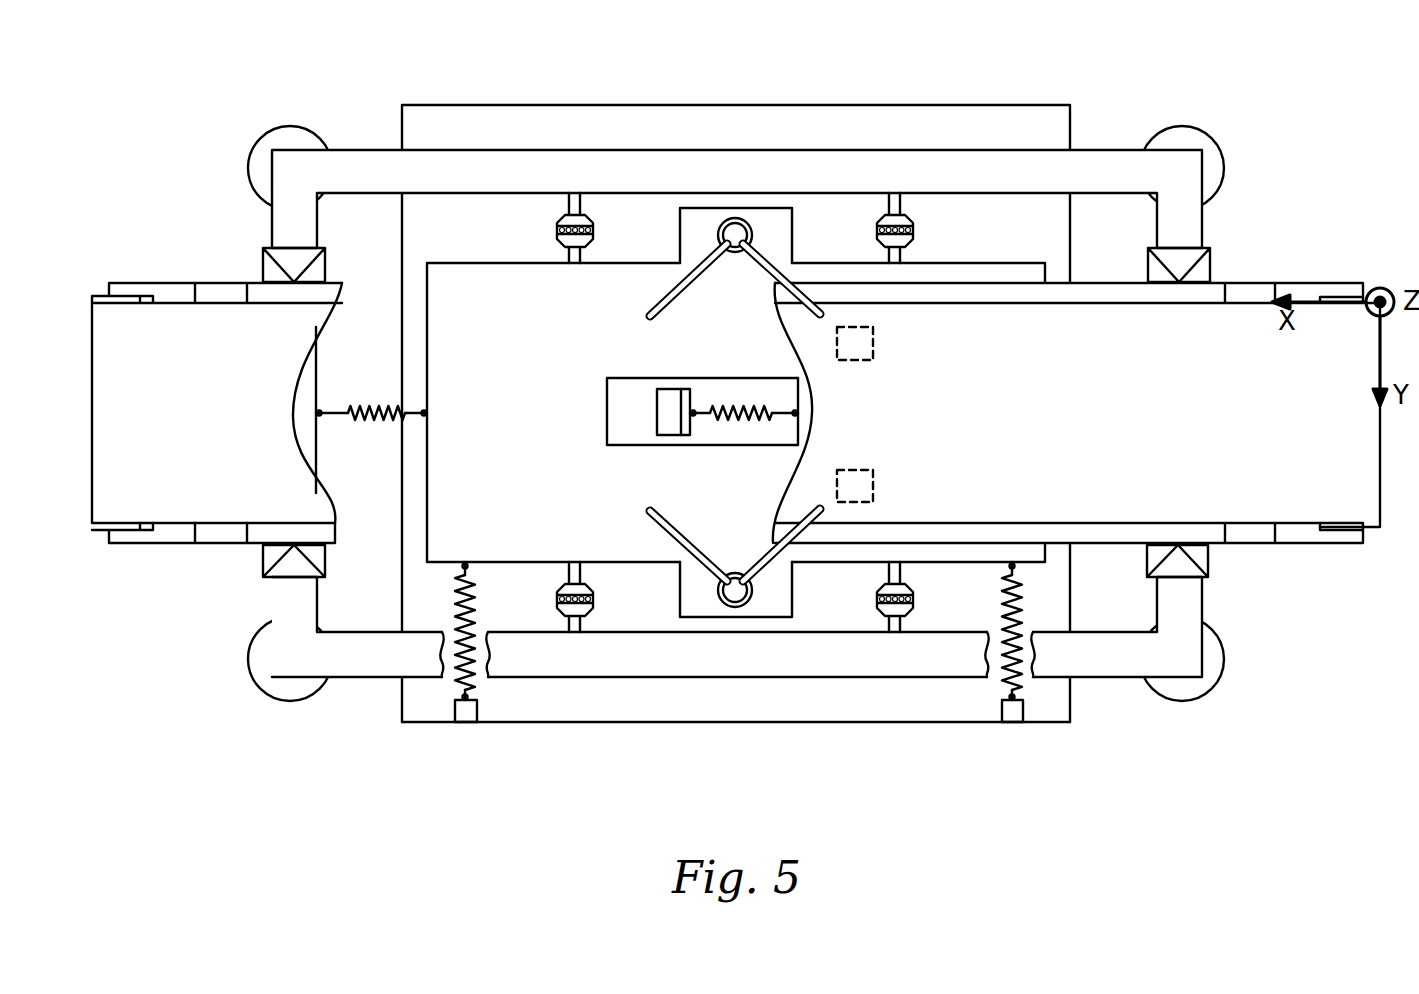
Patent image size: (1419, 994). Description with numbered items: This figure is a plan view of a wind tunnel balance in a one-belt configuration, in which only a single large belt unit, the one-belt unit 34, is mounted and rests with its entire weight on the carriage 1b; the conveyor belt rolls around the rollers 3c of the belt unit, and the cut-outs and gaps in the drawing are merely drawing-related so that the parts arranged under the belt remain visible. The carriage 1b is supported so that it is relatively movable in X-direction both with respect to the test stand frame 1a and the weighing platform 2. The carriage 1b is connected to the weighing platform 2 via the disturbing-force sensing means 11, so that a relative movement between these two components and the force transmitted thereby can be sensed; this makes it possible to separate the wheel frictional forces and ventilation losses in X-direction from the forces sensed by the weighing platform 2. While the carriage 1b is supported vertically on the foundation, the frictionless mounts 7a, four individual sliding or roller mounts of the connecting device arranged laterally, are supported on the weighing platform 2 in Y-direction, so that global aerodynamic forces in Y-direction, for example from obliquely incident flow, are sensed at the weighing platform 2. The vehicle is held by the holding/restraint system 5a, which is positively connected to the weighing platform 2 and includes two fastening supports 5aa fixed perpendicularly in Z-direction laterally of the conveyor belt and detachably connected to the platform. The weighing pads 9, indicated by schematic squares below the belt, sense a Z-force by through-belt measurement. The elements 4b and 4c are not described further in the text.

The test stand frame 1a is at (433, 105).
The carriage 1b is at (1183, 655).
The weighing platform 2 is at (628, 540).
The rollers 3c is at (110, 528).
The damper unit 4b is at (728, 392).
The spring 4c is at (463, 667).
The holding/restraint system 5a is at (757, 580).
The fastening supports 5aa is at (722, 222).
The frictionless mounts 7a is at (560, 217).
The weighing pads 9 is at (853, 335).
The disturbing-force sensing means 11 is at (380, 420).
The one-belt unit 34 is at (1287, 480).